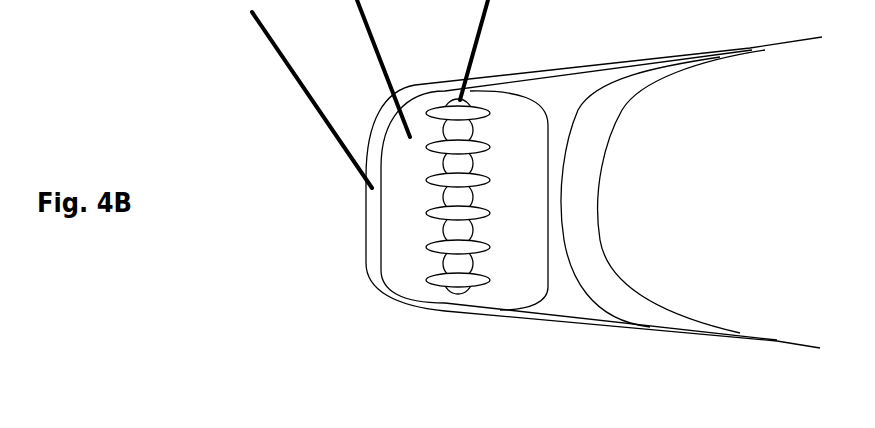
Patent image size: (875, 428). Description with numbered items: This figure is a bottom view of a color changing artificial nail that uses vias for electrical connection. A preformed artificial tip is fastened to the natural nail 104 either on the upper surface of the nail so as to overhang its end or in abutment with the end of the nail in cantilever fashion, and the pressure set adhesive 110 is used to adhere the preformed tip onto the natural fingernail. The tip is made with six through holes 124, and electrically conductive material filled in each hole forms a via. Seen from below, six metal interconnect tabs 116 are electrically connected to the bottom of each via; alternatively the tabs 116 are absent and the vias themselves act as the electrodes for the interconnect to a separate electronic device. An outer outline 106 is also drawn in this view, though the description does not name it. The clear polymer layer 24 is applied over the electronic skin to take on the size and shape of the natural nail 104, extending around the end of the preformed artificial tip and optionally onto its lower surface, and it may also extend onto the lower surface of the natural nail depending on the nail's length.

The clear polymer layer 24 is at (532, 305).
The natural nail 104 is at (657, 78).
The outer envelope 106 is at (785, 138).
The pressure set adhesive 110 is at (586, 93).
The metal interconnect tabs 116 is at (445, 112).
The through holes 124 is at (465, 102).